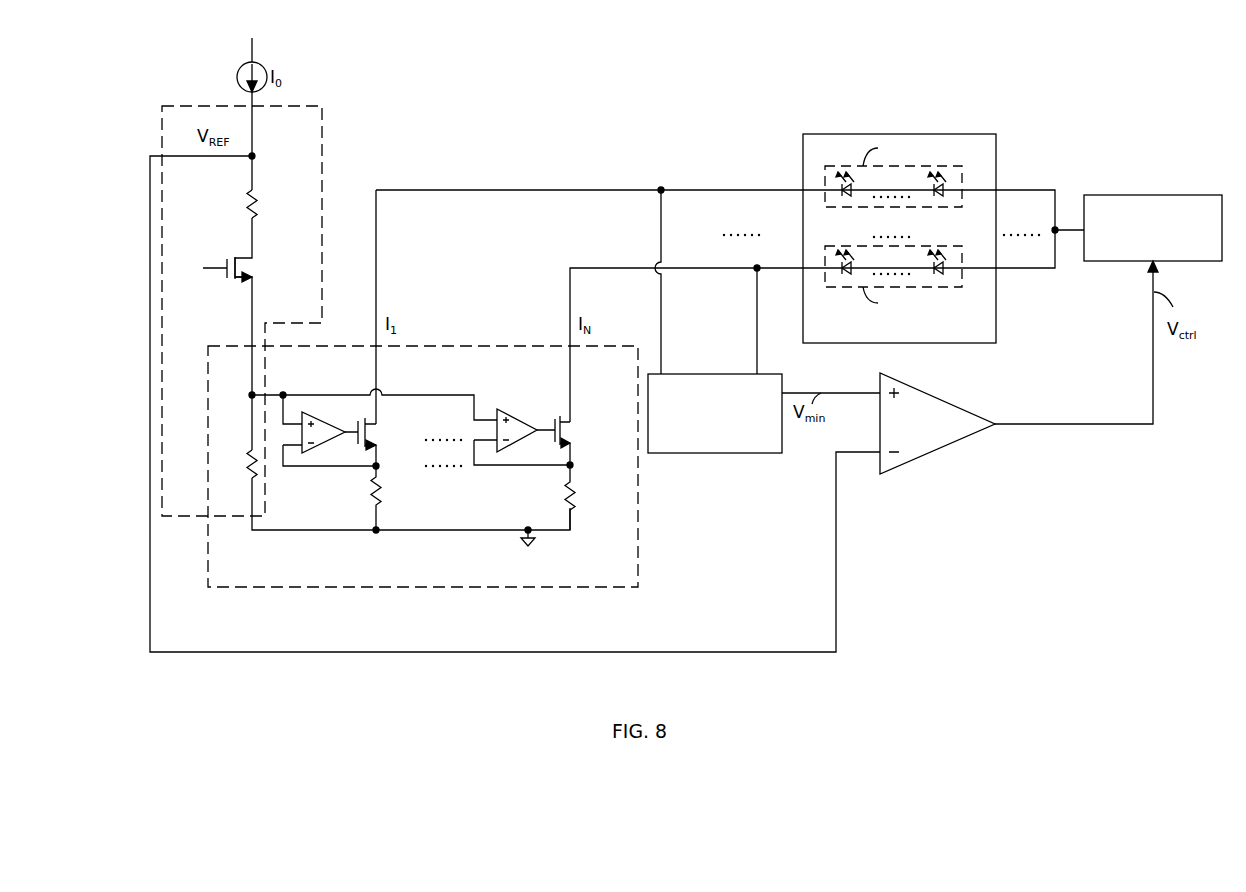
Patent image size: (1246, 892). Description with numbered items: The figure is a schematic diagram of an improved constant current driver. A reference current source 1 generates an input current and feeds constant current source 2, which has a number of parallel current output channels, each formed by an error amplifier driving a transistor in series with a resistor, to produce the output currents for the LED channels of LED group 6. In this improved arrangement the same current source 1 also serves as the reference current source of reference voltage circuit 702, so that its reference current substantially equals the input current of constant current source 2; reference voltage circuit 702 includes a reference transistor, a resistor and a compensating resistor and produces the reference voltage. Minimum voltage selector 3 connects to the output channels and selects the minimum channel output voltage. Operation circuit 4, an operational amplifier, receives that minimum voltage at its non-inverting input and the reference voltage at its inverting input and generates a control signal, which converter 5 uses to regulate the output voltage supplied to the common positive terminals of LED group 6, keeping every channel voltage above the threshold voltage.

The reference current source 1 is at (244, 64).
The reference voltage circuit 702 is at (162, 127).
The constant current source 2 is at (423, 466).
The minimum voltage selector 3 is at (715, 413).
The operation circuit 4 is at (937, 423).
The converter 5 is at (1153, 228).
The LED group 6 is at (899, 238).